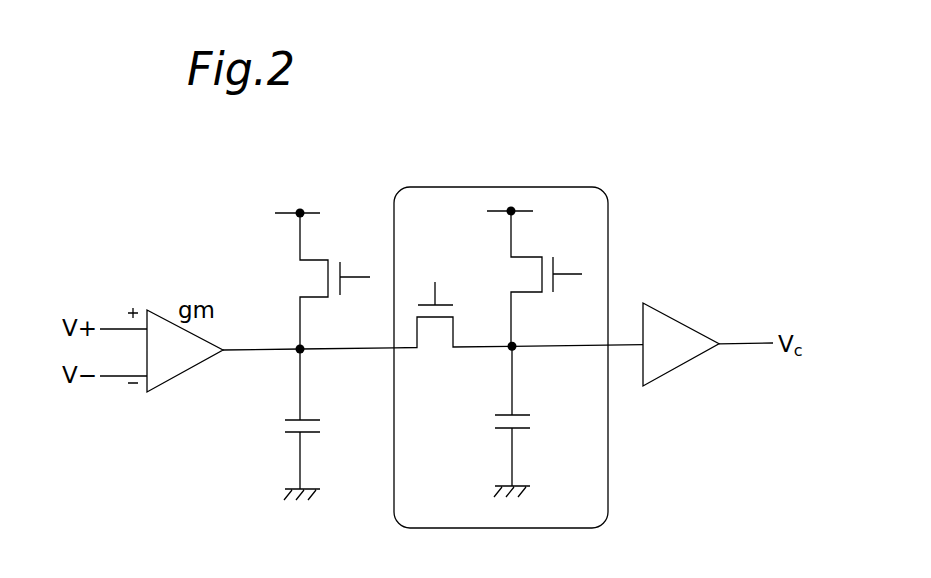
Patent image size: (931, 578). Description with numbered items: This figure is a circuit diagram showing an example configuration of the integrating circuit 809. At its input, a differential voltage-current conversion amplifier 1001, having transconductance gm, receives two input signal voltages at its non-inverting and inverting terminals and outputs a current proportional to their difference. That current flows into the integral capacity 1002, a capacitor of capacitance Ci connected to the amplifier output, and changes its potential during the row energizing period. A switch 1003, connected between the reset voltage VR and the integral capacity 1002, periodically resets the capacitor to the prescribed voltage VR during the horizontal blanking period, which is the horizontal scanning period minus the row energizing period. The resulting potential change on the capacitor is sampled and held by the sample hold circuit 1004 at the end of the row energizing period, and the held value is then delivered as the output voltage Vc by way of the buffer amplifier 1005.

The differential voltage-current conversion amplifier 1001 is at (158, 392).
The integral capacity 1002 is at (287, 421).
The switch 1003 is at (312, 273).
The sample hold circuit 1004 is at (535, 187).
The buffer amplifier 1005 is at (665, 311).
The integrating circuit 809 is at (735, 522).